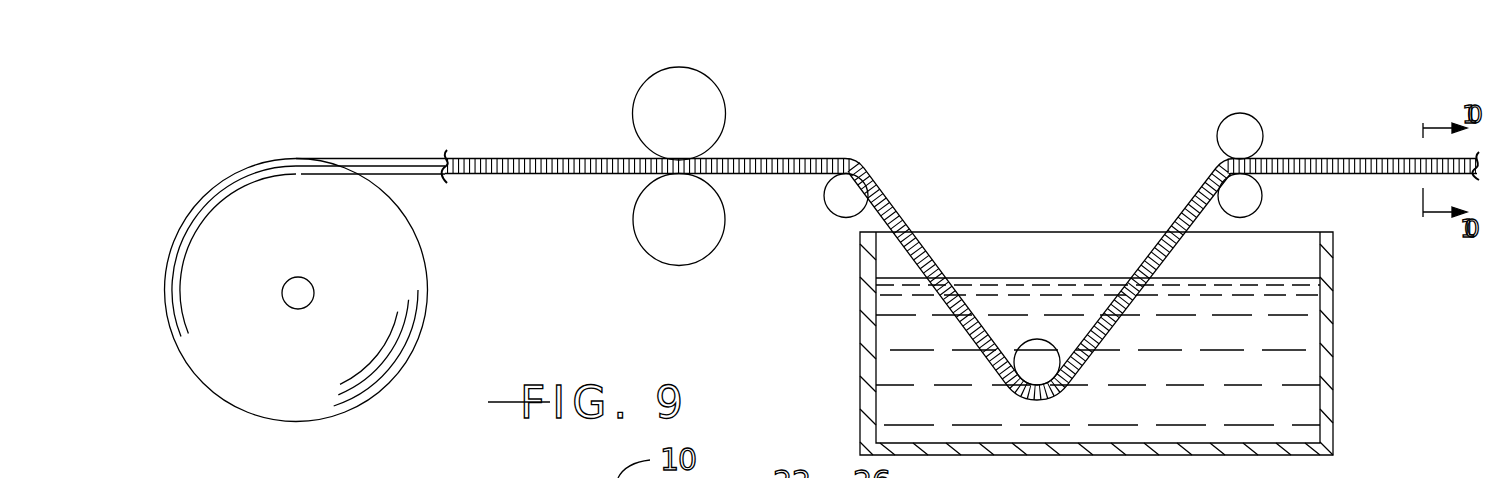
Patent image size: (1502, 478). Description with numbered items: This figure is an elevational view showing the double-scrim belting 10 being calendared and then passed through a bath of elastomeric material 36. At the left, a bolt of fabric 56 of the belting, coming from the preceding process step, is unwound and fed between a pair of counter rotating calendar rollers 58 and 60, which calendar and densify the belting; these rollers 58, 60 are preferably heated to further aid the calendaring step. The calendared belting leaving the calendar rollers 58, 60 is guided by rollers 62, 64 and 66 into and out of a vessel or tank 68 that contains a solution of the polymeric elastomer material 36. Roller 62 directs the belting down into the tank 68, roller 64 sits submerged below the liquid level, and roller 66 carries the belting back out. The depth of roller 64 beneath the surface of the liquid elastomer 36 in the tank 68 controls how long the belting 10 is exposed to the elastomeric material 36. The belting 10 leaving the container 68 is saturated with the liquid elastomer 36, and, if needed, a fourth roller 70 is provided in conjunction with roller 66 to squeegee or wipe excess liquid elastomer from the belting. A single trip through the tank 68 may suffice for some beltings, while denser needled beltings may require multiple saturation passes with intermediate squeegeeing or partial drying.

The belting 10 is at (1326, 148).
The elastomeric material 36 is at (1303, 333).
The bolt of fabric 56 is at (403, 262).
The calendar roller 58 is at (708, 97).
The calendar roller 60 is at (660, 243).
The roller 62 is at (838, 207).
The roller 64 is at (1040, 365).
The roller 66 is at (1250, 197).
The tank 68 is at (1333, 430).
The fourth roller 70 is at (1228, 135).